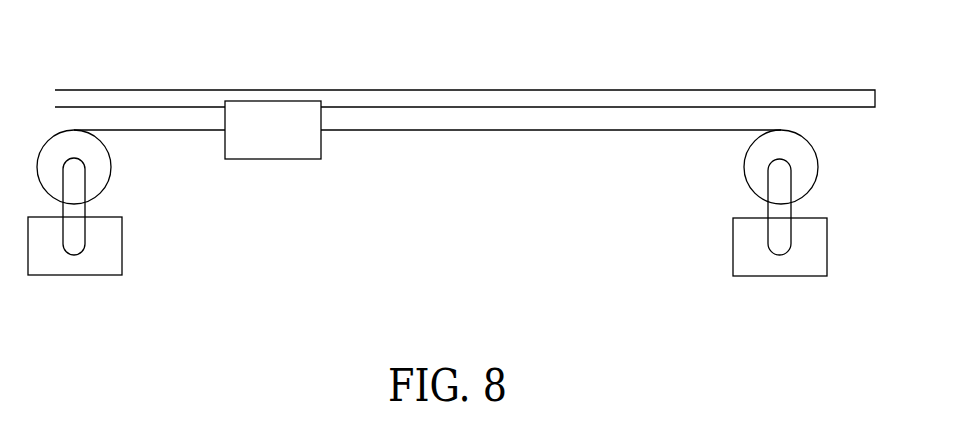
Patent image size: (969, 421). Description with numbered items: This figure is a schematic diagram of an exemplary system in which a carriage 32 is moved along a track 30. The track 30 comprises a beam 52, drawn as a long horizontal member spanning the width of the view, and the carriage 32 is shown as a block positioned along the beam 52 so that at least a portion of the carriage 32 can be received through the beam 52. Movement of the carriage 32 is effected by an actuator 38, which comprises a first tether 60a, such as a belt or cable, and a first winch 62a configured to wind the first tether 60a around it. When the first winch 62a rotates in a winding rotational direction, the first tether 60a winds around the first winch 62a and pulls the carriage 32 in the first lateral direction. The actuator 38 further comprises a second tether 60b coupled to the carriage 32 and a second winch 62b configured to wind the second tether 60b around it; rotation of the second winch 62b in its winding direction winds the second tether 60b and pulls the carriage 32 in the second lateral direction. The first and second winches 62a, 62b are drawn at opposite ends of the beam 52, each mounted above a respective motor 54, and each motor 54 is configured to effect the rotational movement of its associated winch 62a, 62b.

The track 30 is at (465, 61).
The carriage 32 is at (275, 125).
The actuator 38 is at (783, 192).
The beam 52 is at (373, 100).
The motor 54 is at (110, 260).
The first tether 60a is at (115, 132).
The second tether 60b is at (552, 131).
The first winch 62a is at (102, 177).
The second winch 62b is at (757, 169).